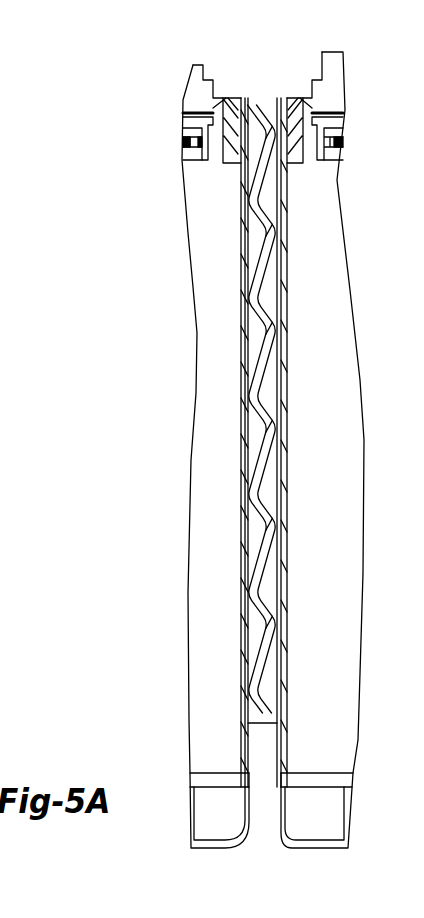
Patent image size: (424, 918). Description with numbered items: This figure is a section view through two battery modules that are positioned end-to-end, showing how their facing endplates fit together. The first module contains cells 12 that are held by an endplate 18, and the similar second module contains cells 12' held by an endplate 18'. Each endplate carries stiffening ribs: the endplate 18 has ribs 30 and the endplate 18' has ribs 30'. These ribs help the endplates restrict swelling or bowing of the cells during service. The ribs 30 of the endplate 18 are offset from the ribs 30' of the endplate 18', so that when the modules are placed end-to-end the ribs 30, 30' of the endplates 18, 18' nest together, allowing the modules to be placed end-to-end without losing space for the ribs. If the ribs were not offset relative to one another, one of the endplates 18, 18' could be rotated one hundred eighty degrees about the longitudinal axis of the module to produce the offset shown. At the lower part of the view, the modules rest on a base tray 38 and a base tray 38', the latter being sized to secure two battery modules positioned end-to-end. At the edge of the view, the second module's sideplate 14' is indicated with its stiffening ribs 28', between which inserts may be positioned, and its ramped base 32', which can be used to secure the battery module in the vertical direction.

The cell 12 is at (215, 456).
The cell 12' is at (322, 450).
The endplate 18 is at (190, 442).
The endplate 18' is at (346, 442).
The stiffening rib 30 is at (314, 414).
The stiffening rib 30' is at (202, 345).
The base tray 38 is at (219, 813).
The base tray 38' is at (314, 813).
The stiffening rib 28' is at (23, 481).
The sideplate 14' is at (15, 472).
The ramped base 32' is at (19, 634).